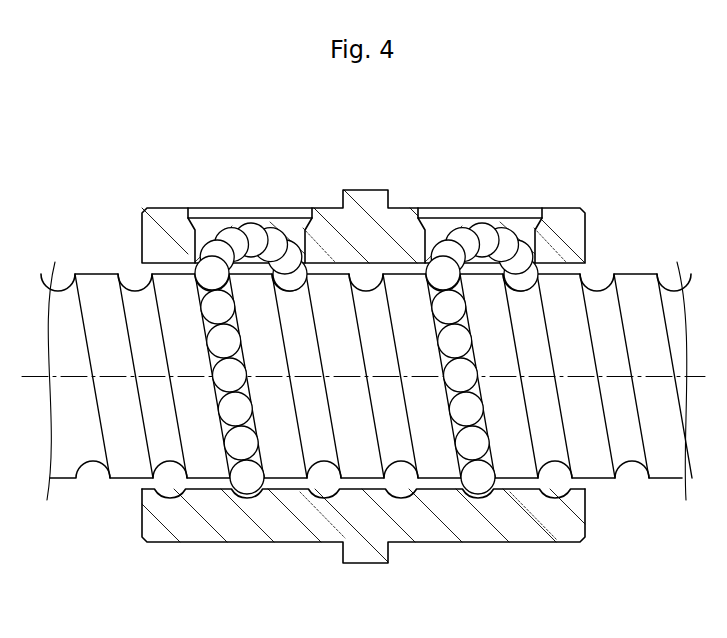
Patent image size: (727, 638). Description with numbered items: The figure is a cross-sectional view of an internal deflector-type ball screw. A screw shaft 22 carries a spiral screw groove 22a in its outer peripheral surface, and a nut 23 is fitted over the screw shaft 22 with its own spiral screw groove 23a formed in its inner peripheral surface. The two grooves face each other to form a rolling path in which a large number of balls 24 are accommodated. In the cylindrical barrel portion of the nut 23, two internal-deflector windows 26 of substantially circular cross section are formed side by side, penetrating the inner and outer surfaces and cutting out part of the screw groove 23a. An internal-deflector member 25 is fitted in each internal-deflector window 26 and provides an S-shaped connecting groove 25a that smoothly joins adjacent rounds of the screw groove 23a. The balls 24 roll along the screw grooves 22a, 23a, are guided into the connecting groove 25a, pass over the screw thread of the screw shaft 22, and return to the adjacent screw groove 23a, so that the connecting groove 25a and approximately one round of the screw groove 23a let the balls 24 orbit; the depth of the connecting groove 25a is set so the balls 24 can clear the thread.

The screw shaft 22 is at (635, 272).
The screw groove 22a is at (634, 465).
The nut 23 is at (436, 545).
The screw groove 23a is at (253, 483).
The balls 24 is at (235, 412).
The internal-deflector member 25 is at (207, 218).
The connecting groove 25a is at (262, 228).
The internal-deflector window 26 is at (289, 243).